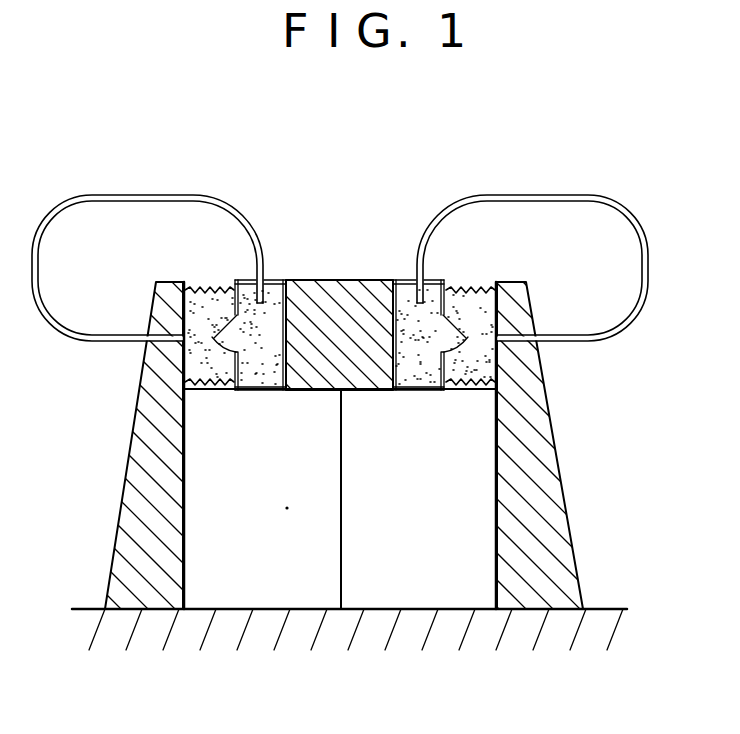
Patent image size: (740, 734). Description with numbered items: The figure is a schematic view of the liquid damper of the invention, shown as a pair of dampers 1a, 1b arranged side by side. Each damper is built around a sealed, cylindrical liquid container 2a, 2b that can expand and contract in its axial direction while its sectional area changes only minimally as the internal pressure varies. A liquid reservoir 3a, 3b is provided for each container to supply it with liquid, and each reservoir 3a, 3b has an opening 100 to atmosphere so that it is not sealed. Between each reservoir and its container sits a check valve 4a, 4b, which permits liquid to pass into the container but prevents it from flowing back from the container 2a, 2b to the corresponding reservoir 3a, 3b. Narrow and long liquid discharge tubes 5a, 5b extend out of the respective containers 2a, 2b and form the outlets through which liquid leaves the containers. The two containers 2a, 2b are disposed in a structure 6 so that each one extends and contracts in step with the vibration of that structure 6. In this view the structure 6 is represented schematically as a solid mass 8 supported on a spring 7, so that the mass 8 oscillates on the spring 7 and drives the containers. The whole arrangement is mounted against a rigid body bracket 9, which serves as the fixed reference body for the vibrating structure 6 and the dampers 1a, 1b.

The liquid damper 1a is at (248, 458).
The liquid damper 1b is at (442, 456).
The liquid container 2a is at (208, 286).
The liquid container 2b is at (467, 286).
The liquid reservoir 3a is at (258, 393).
The liquid reservoir 3b is at (410, 393).
The check valve 4a is at (215, 368).
The check valve 4b is at (464, 368).
The liquid discharge tube 5a is at (54, 307).
The liquid discharge tube 5b is at (647, 262).
The structure 6 is at (358, 268).
The spring 7 is at (341, 500).
The solid mass 8 is at (312, 280).
The rigid body bracket 9 is at (128, 486).
The opening 100 is at (260, 270).